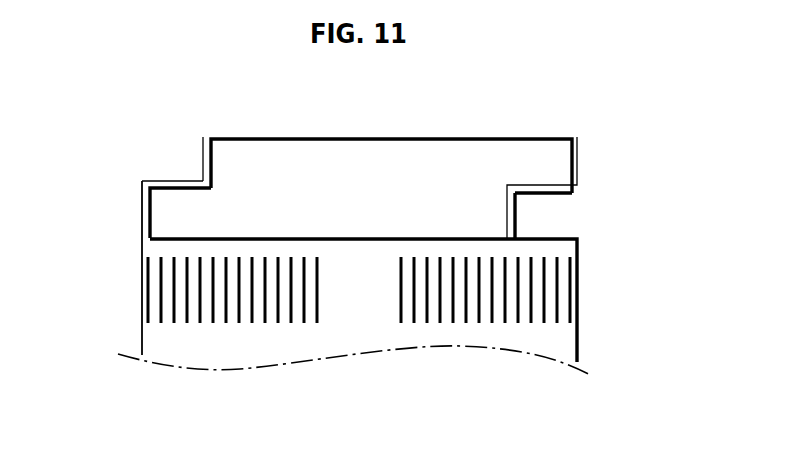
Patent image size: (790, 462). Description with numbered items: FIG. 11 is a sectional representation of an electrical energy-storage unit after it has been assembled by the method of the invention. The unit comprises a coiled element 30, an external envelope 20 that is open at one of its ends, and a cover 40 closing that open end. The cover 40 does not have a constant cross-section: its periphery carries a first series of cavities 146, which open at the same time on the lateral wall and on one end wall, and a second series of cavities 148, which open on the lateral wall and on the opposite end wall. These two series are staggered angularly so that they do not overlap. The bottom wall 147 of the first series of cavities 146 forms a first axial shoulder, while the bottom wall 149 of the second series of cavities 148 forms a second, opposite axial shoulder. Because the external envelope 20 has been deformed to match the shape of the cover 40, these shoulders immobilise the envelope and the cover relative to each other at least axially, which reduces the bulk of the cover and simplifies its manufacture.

The external envelope 20 is at (143, 287).
The coiled element 30 is at (268, 331).
The cover 40 is at (353, 159).
The first series of cavities 146 is at (202, 158).
The bottom wall of the first series of cavities 147 is at (172, 182).
The second series of cavities 148 is at (518, 217).
The bottom wall of the second series of cavities 149 is at (557, 197).